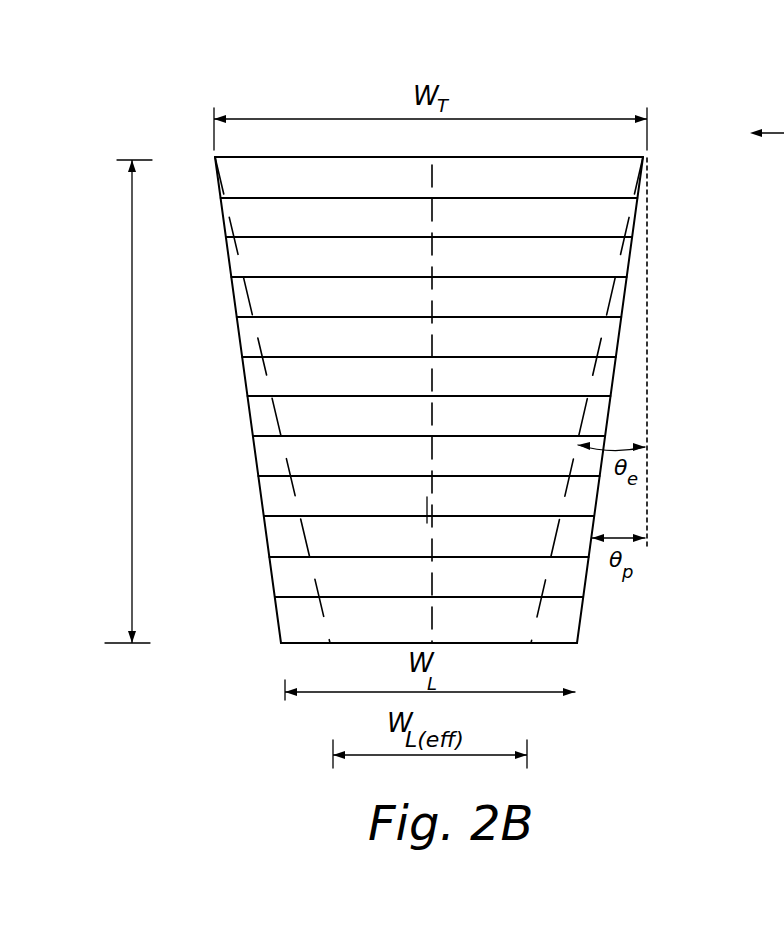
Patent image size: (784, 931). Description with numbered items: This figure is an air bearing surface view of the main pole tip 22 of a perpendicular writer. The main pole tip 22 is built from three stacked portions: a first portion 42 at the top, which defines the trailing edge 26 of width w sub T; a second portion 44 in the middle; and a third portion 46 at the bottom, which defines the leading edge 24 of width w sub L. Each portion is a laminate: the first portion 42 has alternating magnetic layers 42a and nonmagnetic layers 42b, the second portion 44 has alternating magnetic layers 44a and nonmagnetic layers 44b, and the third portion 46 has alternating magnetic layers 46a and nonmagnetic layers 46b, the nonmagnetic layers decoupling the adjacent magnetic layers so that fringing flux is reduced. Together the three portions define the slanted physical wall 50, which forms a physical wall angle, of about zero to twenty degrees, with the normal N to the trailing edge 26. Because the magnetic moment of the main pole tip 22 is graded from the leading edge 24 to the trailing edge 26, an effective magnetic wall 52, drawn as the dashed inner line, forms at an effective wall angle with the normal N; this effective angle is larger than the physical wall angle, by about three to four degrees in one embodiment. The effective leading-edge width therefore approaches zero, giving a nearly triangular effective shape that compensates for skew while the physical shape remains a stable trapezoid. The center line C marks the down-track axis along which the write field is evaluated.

The main pole tip 22 is at (178, 115).
The leading edge 24 is at (343, 643).
The trailing edge 26 is at (236, 158).
The first portion 42 is at (200, 163).
The second portion 44 is at (225, 325).
The third portion 46 is at (252, 487).
The magnetic layers 42a is at (602, 220).
The nonmagnetic layers 42b is at (553, 235).
The magnetic layers 44a is at (565, 357).
The nonmagnetic layers 44b is at (542, 358).
The magnetic layers 46a is at (523, 528).
The nonmagnetic layers 46b is at (515, 596).
The physical wall 50 is at (585, 631).
The effective magnetic wall 52 is at (542, 615).
The center line C is at (433, 185).
The normal N is at (648, 188).